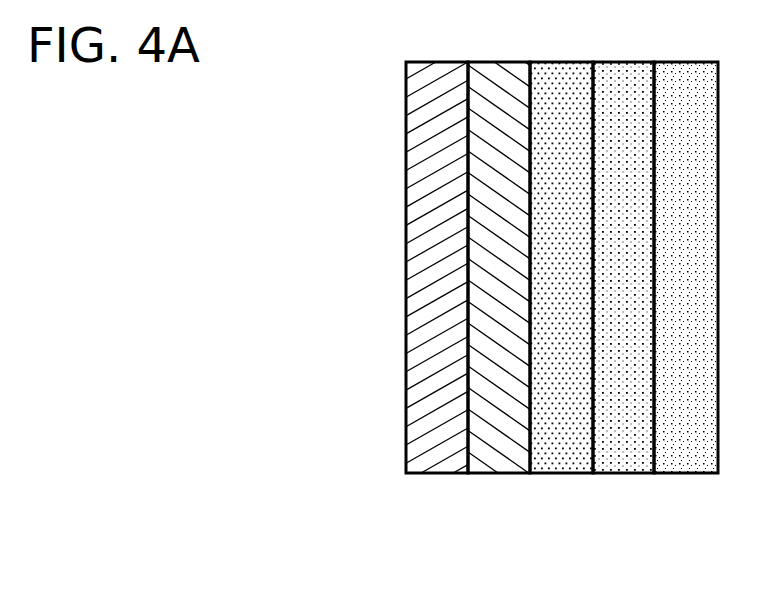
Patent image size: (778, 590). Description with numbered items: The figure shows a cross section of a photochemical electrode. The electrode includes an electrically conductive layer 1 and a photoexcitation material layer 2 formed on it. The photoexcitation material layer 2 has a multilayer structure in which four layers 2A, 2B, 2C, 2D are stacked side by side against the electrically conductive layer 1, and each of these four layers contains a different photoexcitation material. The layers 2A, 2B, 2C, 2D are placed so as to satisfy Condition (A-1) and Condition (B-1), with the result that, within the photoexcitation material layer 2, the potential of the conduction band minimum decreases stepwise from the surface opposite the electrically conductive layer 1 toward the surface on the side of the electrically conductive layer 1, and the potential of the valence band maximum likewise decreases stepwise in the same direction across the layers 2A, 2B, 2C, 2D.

The electrically conductive layer 1 is at (441, 82).
The photoexcitation material layer 2 is at (593, 326).
The first layer of photoexcitation material layer 2A is at (505, 452).
The second layer of photoexcitation material layer 2B is at (567, 452).
The third layer of photoexcitation material layer 2C is at (632, 452).
The fourth layer of photoexcitation material layer 2D is at (686, 298).